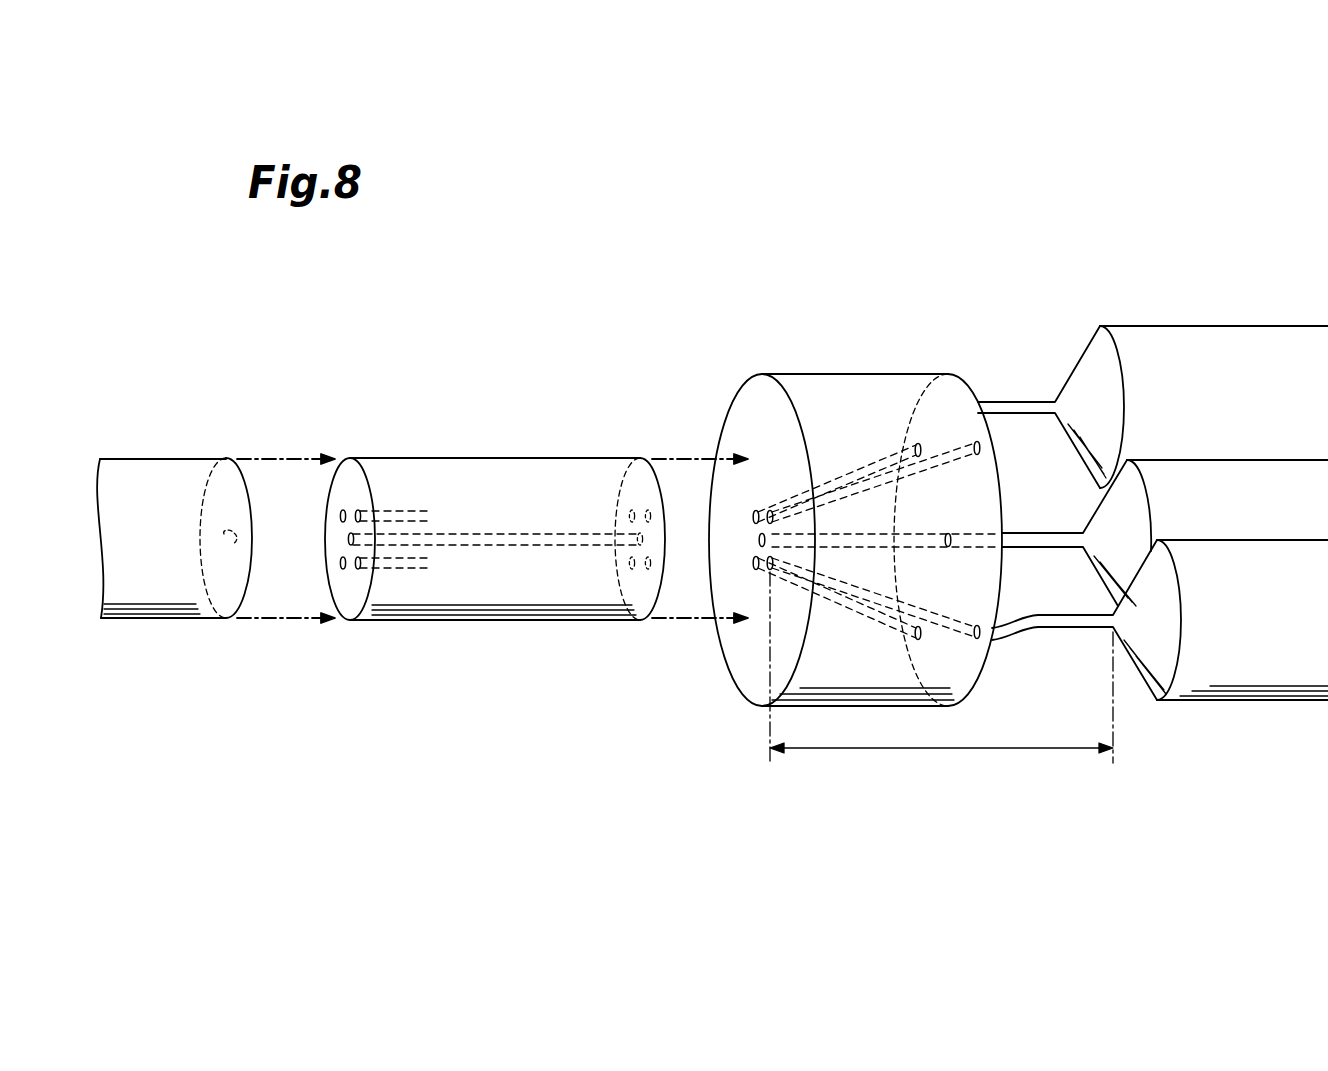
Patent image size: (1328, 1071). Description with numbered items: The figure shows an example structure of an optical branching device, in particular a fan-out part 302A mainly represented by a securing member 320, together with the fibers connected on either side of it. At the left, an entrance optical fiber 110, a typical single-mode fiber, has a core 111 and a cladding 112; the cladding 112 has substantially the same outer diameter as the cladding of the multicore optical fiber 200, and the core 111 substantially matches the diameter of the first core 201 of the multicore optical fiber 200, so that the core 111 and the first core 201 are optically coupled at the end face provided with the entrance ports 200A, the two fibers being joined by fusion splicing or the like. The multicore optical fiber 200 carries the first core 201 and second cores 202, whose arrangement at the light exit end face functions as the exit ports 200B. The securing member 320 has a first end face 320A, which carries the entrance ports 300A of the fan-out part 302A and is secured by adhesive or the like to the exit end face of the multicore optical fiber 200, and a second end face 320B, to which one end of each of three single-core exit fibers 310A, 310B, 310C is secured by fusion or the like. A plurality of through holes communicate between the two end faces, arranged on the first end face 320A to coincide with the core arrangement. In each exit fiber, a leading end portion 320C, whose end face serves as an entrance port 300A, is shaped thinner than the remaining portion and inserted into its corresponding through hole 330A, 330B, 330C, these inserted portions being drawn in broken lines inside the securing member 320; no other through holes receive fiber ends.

The entrance optical fiber 110 is at (151, 594).
The core 111 is at (230, 540).
The cladding 112 is at (238, 492).
The multicore optical fiber 200 is at (493, 582).
The entrance ports 200A is at (344, 558).
The exit ports 200B is at (652, 560).
The first core 201 is at (489, 534).
The second cores 202 is at (410, 511).
The entrance ports 300A is at (754, 522).
The fan-out part 302A is at (1199, 236).
The single-core fiber 310A is at (1185, 345).
The single-core fiber 310B is at (1277, 480).
The single-core fiber 310C is at (1258, 678).
The securing member 320 is at (898, 374).
The first end face 320A is at (748, 402).
The second end face 320B is at (971, 390).
The leading end portion 320C is at (941, 677).
The through hole 330A is at (893, 452).
The through hole 330B is at (920, 535).
The through hole 330C is at (953, 633).